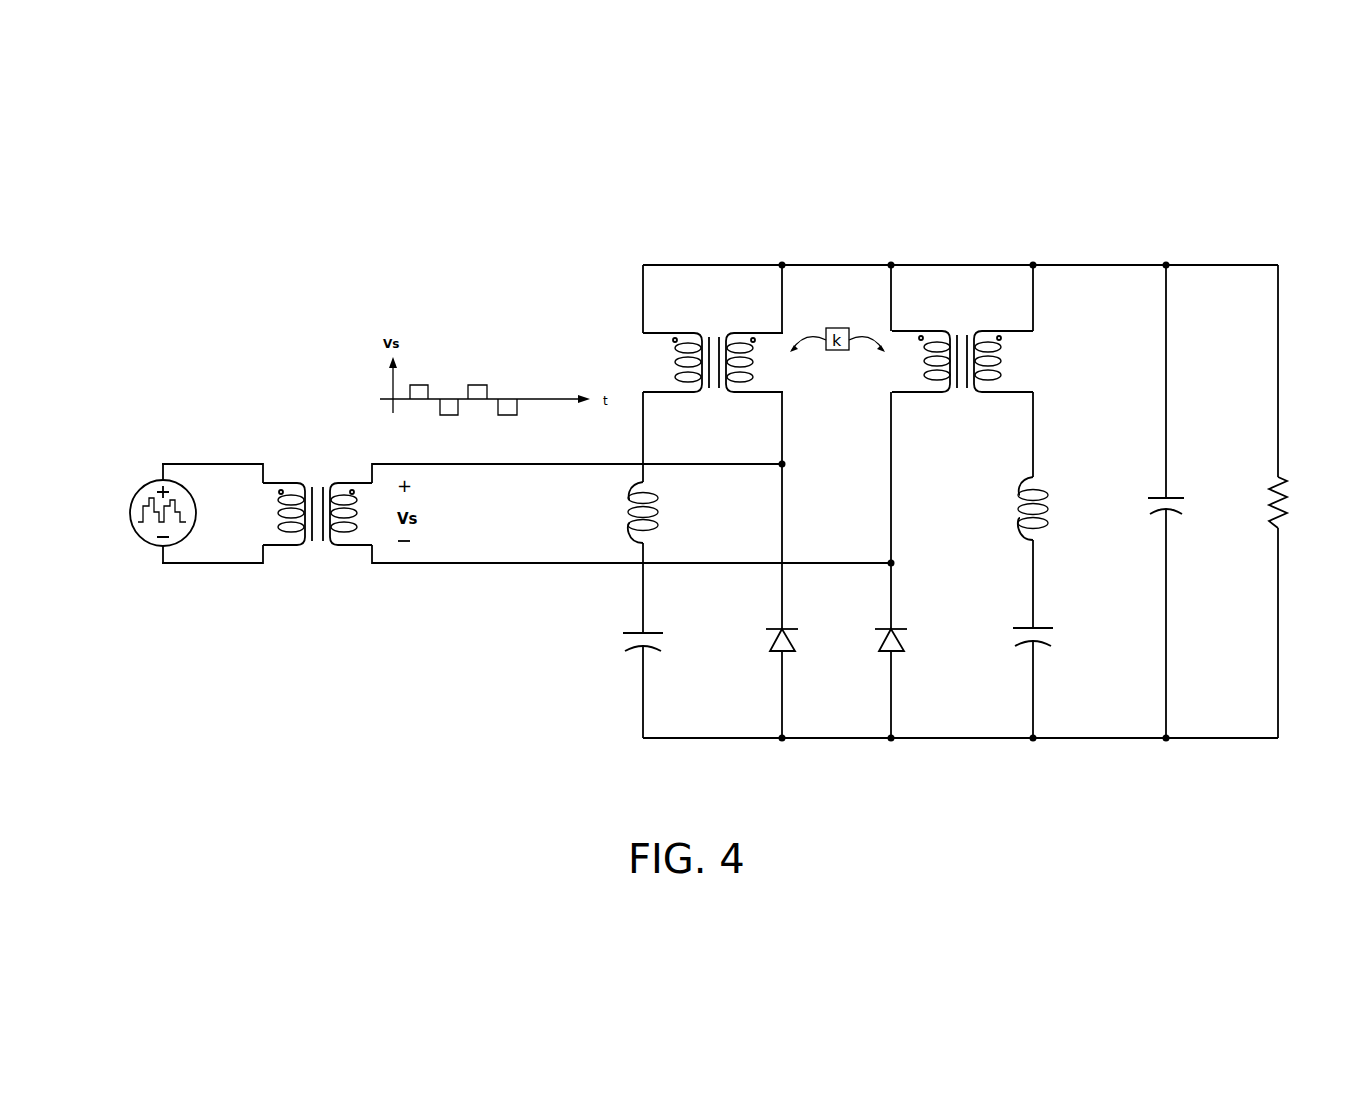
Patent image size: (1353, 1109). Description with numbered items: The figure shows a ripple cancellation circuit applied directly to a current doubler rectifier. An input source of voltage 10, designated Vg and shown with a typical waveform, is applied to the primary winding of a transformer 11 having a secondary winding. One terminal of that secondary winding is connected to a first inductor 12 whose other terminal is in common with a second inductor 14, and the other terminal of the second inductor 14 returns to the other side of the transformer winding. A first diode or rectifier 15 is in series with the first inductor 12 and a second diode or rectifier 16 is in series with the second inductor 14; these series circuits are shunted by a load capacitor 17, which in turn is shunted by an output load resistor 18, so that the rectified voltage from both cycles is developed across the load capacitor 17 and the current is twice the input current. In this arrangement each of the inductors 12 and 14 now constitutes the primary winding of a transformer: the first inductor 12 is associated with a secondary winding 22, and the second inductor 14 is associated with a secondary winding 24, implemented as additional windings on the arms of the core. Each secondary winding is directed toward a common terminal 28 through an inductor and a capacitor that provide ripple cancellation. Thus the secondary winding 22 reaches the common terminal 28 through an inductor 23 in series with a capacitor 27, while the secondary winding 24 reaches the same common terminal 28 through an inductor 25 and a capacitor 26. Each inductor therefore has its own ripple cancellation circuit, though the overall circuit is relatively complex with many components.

The input source of voltage 10 is at (150, 540).
The transformer 11 is at (332, 550).
The first inductor 12 is at (684, 316).
The second inductor 14 is at (984, 314).
The first diode or rectifier 15 is at (768, 640).
The second diode or rectifier 16 is at (905, 640).
The load capacitor 17 is at (1147, 505).
The output load resistor 18 is at (1287, 523).
The secondary winding 22 is at (662, 360).
The inductor 23 is at (620, 510).
The secondary winding 24 is at (1025, 362).
The inductor 25 is at (1015, 507).
The capacitor 26 is at (1013, 632).
The capacitor 27 is at (622, 642).
The common terminal 28 is at (673, 740).